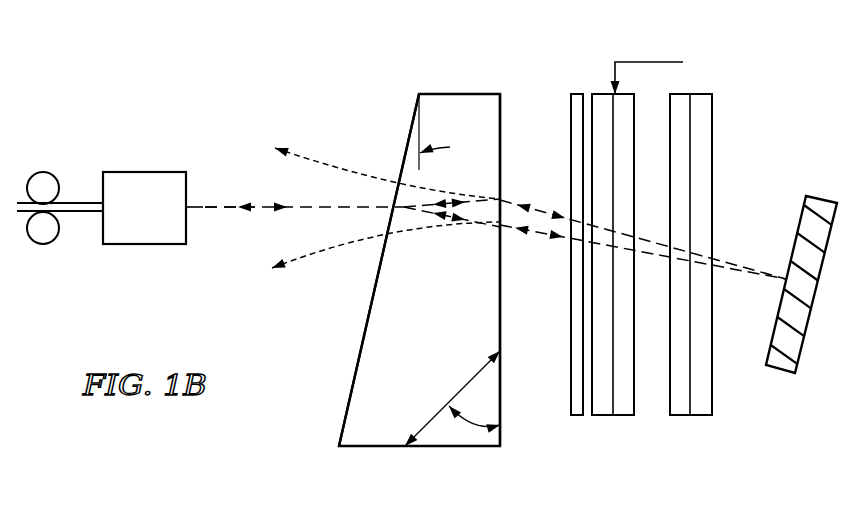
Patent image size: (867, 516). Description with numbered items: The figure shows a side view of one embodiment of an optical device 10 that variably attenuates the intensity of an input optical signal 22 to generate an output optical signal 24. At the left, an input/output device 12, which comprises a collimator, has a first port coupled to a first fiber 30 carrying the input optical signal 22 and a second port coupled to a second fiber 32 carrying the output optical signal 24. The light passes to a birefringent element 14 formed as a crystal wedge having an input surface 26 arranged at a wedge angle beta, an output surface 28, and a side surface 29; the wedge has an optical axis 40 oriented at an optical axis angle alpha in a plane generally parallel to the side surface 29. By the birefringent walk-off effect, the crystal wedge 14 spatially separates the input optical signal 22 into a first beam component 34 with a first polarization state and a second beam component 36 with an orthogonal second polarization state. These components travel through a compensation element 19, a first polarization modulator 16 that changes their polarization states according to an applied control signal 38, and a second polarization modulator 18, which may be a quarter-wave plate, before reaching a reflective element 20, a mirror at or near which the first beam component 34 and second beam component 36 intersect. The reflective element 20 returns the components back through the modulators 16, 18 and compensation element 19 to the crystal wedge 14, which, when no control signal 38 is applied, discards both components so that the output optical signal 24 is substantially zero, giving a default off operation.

The optical device 10 is at (260, 98).
The input/output device 12 is at (145, 172).
The birefringent element 14 is at (378, 446).
The first polarization modulator 16 is at (620, 415).
The second polarization modulator 18 is at (700, 415).
The compensation element 19 is at (577, 94).
The reflective element 20 is at (778, 372).
The input optical signal 22 is at (304, 208).
The output optical signal 24 is at (213, 205).
The input surface 26 is at (354, 381).
The output surface 28 is at (500, 398).
The side surface 29 is at (425, 300).
The first fiber 30 is at (87, 212).
The second fiber 32 is at (87, 203).
The first beam component 34 is at (538, 212).
The second beam component 36 is at (540, 235).
The control signal 38 is at (650, 62).
The optical axis 40 is at (467, 378).